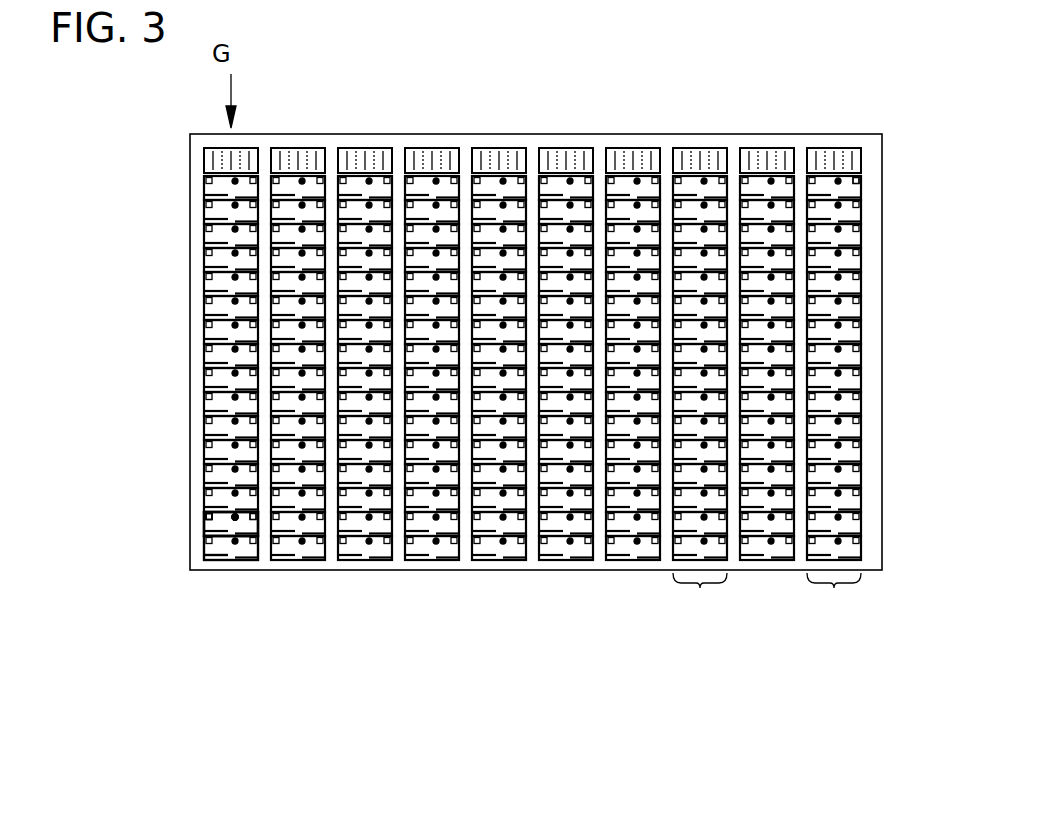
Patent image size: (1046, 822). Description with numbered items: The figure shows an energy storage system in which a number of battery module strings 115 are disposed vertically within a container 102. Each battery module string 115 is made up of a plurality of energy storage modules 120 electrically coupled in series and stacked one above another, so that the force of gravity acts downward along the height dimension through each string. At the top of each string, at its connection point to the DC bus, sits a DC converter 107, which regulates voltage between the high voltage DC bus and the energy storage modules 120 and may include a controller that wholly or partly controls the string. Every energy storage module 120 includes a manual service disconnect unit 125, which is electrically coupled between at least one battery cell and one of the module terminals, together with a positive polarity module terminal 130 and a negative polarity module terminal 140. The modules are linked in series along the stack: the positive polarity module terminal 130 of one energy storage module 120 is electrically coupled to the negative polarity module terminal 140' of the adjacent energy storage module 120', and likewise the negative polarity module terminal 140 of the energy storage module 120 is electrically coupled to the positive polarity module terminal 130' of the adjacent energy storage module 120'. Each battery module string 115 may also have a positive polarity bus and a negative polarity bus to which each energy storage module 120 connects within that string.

The container 102 is at (462, 133).
The DC converter 107 is at (862, 162).
The manual service disconnect unit 125 is at (860, 182).
The positive polarity module terminal of adjacent energy storage module 130' is at (160, 488).
The adjacent energy storage module 120' is at (190, 527).
The positive polarity module terminal 130 is at (174, 588).
The energy storage module 120 is at (225, 578).
The negative polarity module terminal 140 is at (232, 596).
The negative polarity module terminal of adjacent energy storage module 140' is at (280, 582).
The battery module string 115 is at (767, 595).